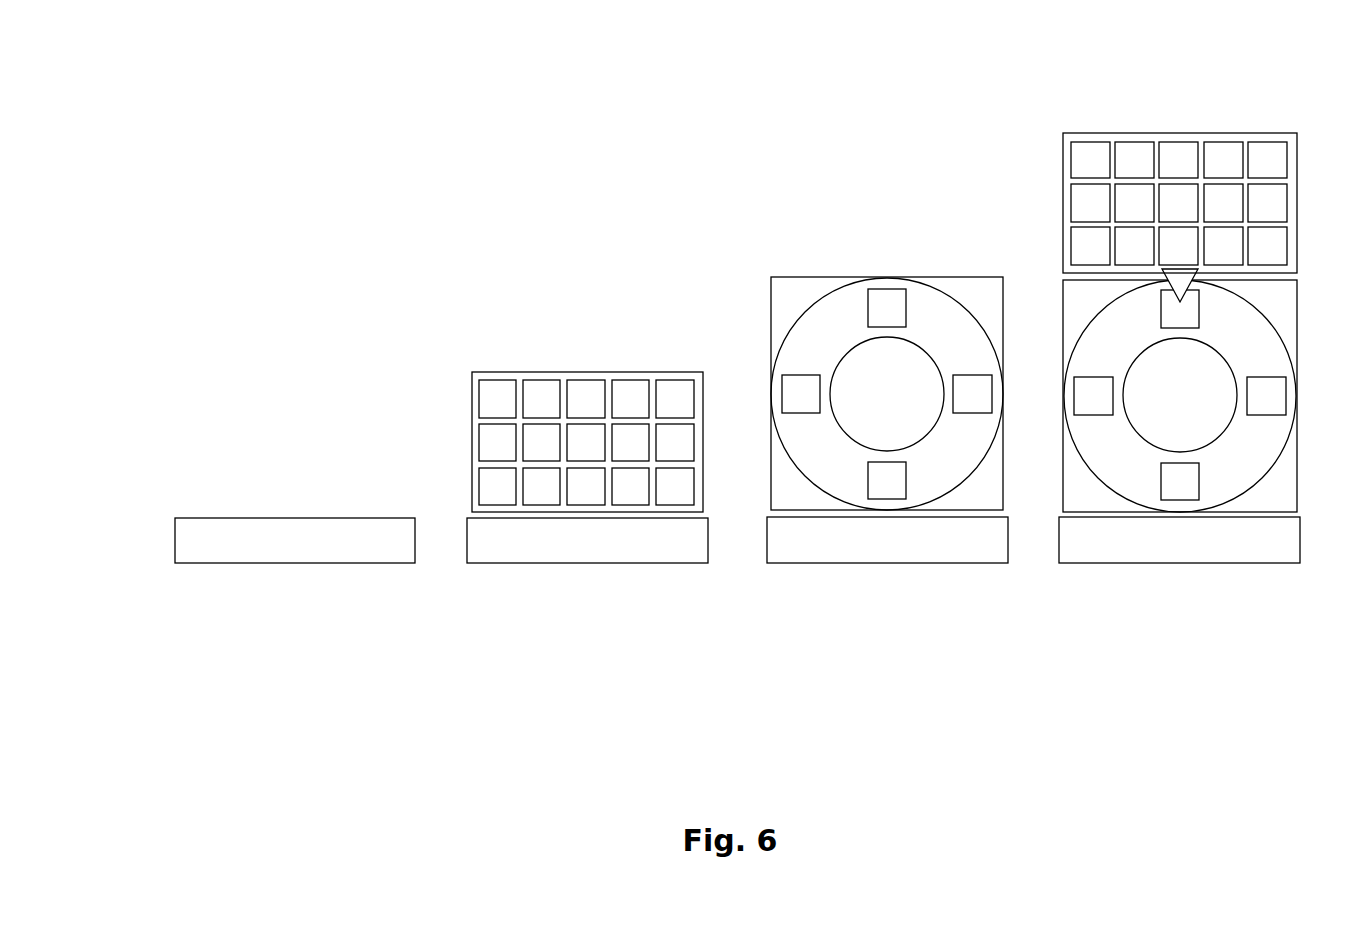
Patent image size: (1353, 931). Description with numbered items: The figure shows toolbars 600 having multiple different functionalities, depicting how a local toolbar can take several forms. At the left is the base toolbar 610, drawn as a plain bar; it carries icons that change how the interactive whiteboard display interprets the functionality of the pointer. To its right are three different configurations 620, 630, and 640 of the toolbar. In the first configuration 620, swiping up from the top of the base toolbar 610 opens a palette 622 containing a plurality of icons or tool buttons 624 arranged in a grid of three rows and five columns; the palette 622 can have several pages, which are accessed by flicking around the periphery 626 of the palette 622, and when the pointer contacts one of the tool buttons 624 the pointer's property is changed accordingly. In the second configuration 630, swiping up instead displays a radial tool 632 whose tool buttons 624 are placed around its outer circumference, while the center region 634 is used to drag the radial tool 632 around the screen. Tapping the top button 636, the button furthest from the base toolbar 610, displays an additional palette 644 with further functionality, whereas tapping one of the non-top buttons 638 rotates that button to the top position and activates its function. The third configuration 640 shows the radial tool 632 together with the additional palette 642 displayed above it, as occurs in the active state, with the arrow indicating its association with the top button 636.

The assembly sequence 600 is at (246, 69).
The base toolbar 610 is at (250, 578).
The configuration 620 is at (585, 578).
The palette 622 is at (505, 372).
The tool buttons 624 is at (640, 398).
The periphery 626 is at (703, 400).
The configuration 630 is at (880, 578).
The radial tool 632 is at (863, 277).
The center region 634 is at (878, 400).
The top button 636 is at (878, 308).
The non-top buttons 638 is at (970, 412).
The configuration 640 is at (1182, 578).
The additional palette 642 is at (1193, 132).
The additional palette 644 is at (1270, 162).